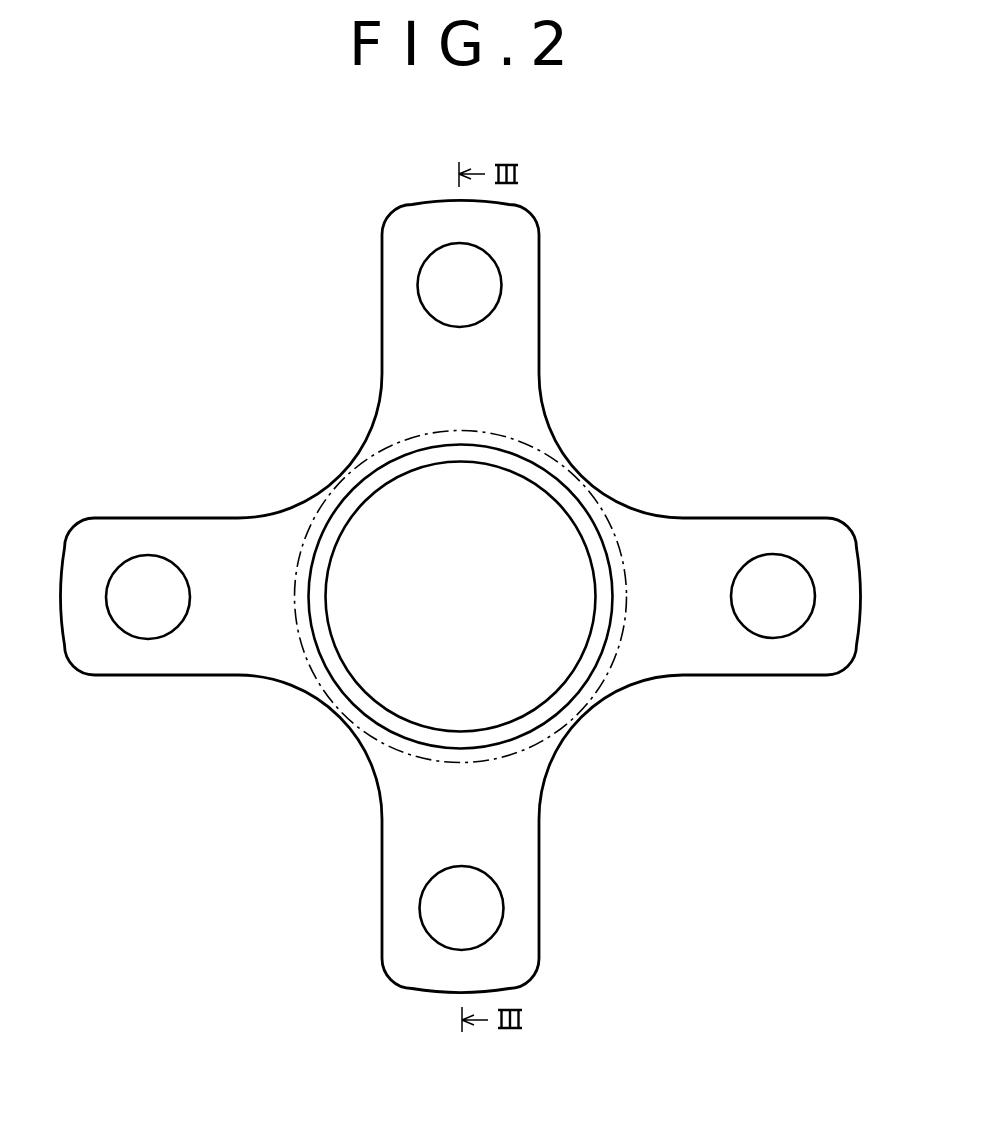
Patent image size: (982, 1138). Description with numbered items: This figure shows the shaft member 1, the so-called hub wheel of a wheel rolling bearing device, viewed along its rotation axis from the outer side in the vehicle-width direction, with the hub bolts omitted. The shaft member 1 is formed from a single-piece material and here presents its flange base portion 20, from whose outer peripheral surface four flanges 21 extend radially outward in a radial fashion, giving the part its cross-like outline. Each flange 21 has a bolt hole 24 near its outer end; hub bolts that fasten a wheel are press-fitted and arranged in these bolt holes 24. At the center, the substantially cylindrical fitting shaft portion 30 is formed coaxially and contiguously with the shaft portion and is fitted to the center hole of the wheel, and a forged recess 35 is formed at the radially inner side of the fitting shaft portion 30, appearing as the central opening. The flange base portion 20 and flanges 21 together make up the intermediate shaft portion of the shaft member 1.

The shaft member 1 is at (316, 423).
The flange base portion 20 is at (610, 512).
The flange 21 is at (513, 333).
The bolt hole 24 is at (487, 258).
The fitting shaft portion 30 is at (508, 453).
The forged recess 35 is at (375, 699).